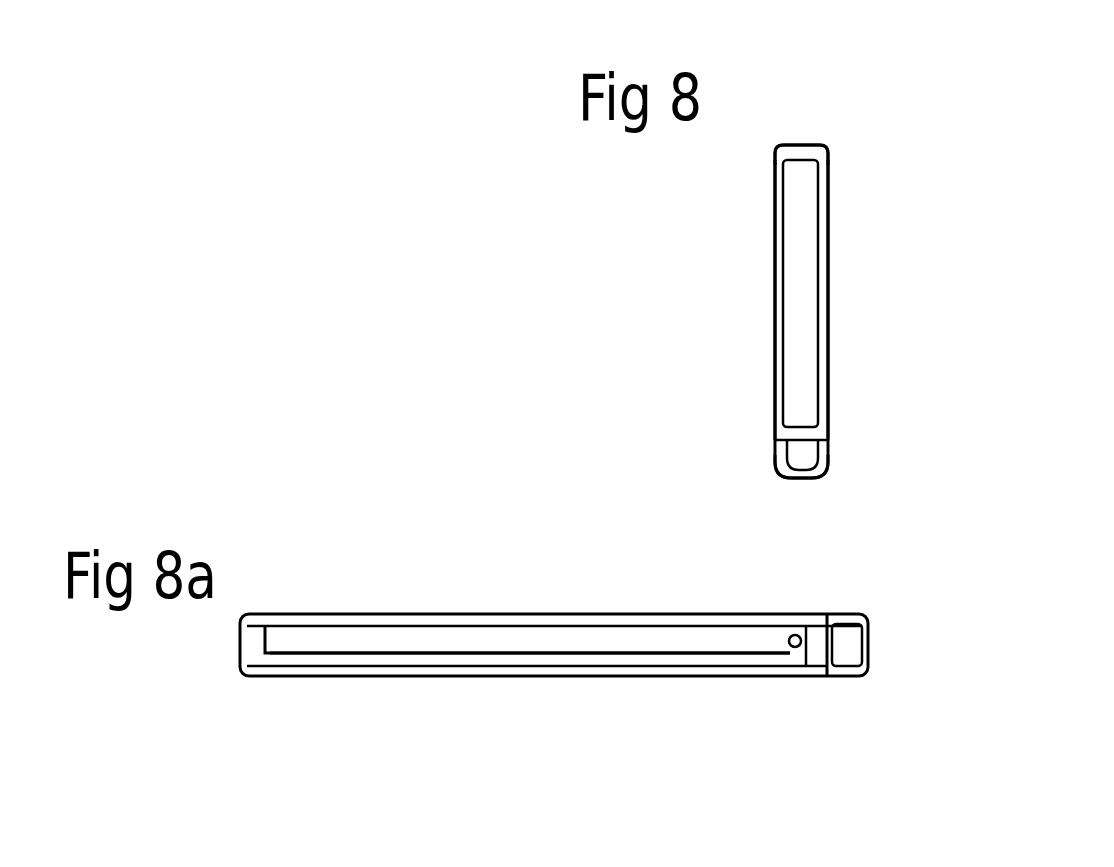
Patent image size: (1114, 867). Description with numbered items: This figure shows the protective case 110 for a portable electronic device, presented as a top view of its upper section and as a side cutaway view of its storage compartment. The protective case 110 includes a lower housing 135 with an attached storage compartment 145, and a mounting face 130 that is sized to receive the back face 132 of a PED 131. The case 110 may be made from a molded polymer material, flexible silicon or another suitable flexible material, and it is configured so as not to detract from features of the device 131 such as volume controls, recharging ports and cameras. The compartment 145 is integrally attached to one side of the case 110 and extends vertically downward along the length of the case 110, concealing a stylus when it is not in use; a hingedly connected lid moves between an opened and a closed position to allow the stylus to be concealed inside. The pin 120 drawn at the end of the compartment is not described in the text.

In FIG. 8, the protective case 110 is at (446, 283).
In FIG. 8A, the pivot pin 120 is at (798, 650).
In FIG. 8, the mounting face 130 is at (775, 303).
In FIG. 8A, the mounting face 130 is at (400, 614).
In FIG. 8, the PED 131 is at (787, 145).
In FIG. 8A, the PED 131 is at (868, 623).
In FIG. 8, the back face 132 is at (780, 470).
In FIG. 8, the lower housing 135 is at (827, 273).
In FIG. 8A, the lower housing 135 is at (315, 655).
In FIG. 8, the storage compartment 145 is at (812, 475).
In FIG. 8A, the storage compartment 145 is at (443, 642).